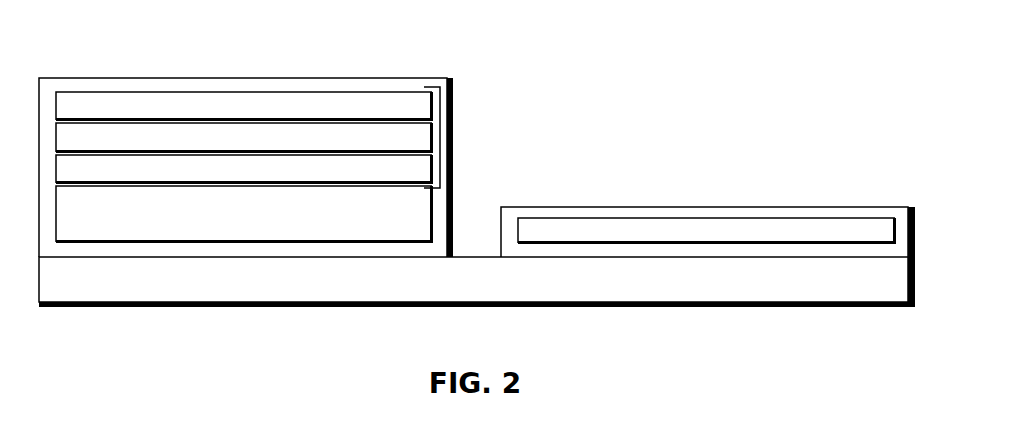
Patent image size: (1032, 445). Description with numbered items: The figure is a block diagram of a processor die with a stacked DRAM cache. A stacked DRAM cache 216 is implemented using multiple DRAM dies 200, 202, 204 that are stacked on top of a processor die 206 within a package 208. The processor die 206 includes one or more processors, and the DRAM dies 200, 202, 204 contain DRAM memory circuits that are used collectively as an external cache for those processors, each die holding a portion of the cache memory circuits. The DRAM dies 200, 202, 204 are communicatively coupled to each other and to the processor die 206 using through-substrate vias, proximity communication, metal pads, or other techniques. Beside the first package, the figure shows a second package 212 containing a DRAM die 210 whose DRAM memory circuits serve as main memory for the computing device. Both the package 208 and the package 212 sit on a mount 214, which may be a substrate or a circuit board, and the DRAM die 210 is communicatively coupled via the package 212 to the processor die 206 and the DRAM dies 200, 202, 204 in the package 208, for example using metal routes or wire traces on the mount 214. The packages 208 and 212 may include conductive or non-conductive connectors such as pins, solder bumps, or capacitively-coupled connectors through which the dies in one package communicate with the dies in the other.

The DRAM die 200 is at (244, 169).
The DRAM die 202 is at (244, 138).
The DRAM die 204 is at (244, 106).
The processor die 206 is at (244, 214).
The package 208 is at (183, 70).
The DRAM die 210 is at (707, 231).
The package 212 is at (787, 197).
The mount 214 is at (477, 257).
The stacked DRAM cache 216 is at (441, 137).